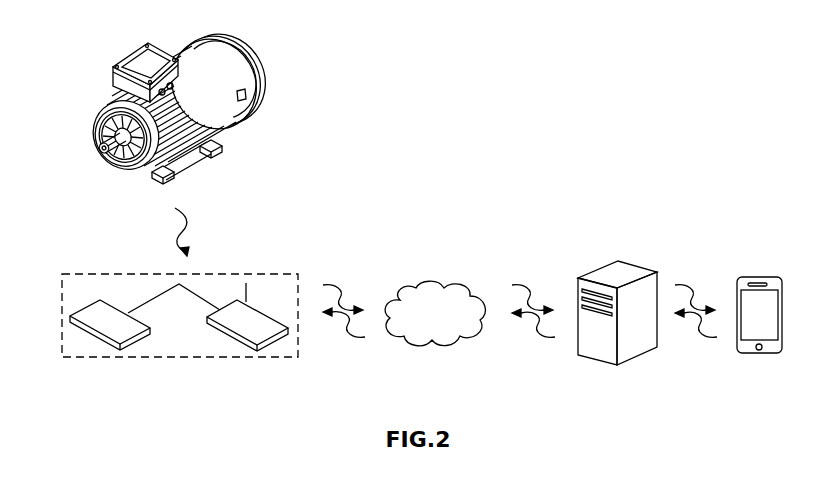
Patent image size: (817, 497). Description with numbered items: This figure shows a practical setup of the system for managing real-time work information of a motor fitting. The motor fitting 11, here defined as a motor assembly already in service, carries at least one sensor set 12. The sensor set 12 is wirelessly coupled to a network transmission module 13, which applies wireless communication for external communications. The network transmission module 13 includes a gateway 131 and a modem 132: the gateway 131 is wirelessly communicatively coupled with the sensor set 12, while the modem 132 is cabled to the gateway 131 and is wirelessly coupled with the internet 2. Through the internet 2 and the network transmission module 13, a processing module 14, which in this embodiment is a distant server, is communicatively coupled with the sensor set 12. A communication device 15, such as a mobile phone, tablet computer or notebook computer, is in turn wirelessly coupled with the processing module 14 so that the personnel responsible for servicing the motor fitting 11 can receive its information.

The internet 2 is at (439, 290).
The motor fitting 11 is at (258, 74).
The sensor set 12 is at (254, 92).
The network transmission module 13 is at (180, 337).
The gateway 131 is at (108, 346).
The modem 132 is at (245, 348).
The processing module 14 is at (600, 353).
The communication device 15 is at (750, 355).